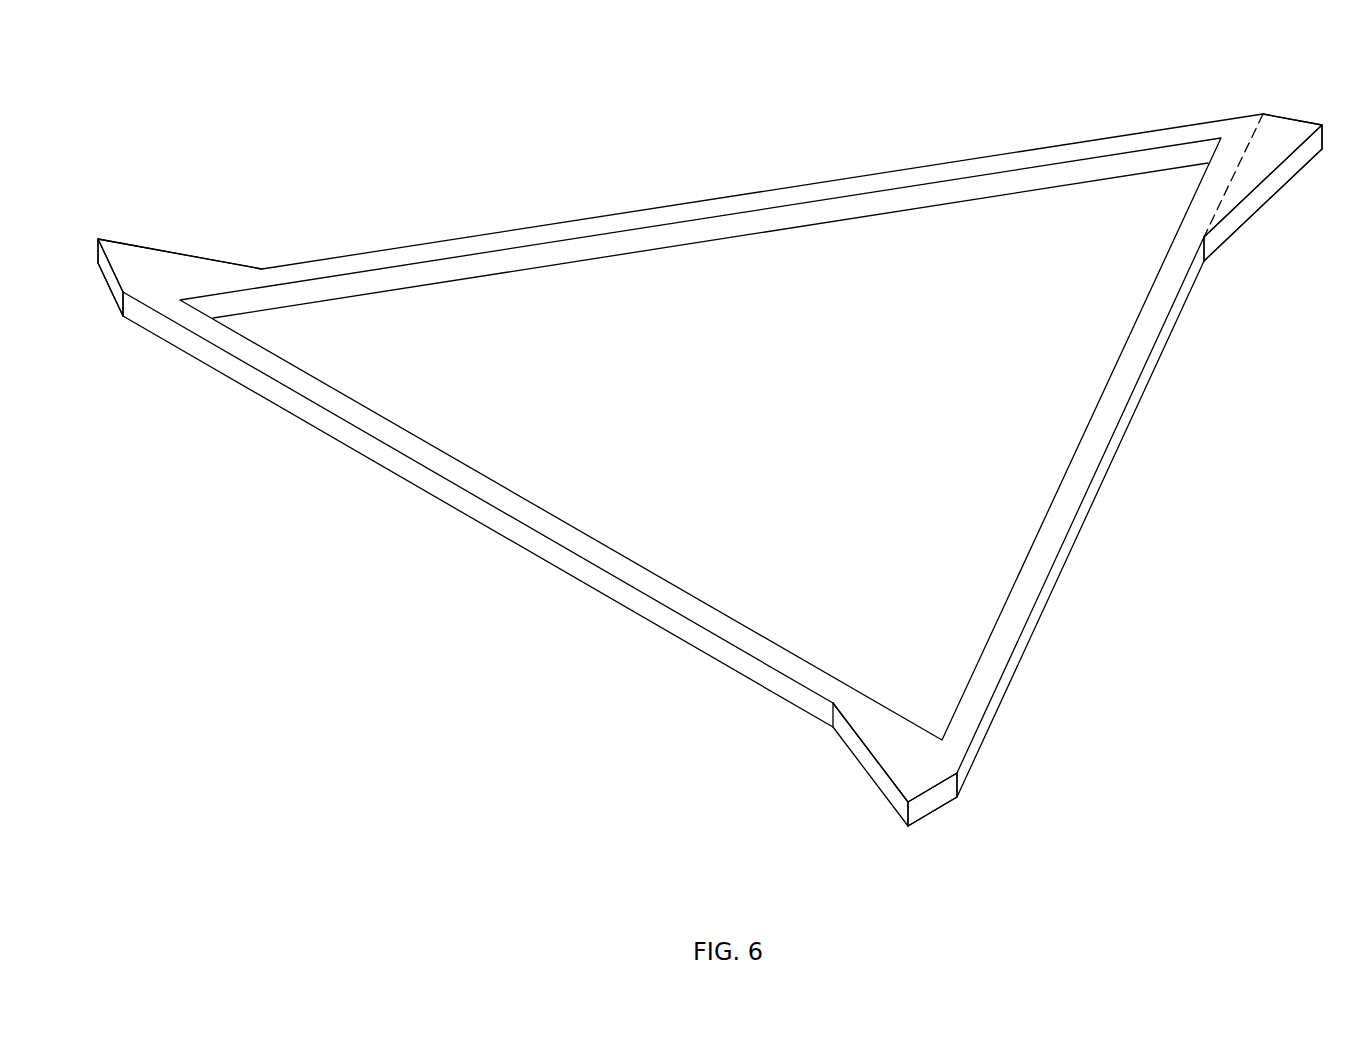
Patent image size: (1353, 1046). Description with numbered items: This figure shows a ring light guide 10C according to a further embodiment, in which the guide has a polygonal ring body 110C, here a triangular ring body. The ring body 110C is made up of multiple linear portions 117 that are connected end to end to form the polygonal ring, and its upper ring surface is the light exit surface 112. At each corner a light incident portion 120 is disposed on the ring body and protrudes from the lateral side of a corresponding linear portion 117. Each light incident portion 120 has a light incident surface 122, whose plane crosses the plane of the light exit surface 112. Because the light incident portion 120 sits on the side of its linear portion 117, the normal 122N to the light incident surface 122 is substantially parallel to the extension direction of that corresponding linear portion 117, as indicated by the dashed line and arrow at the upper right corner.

The ring light guide 10C is at (162, 70).
The polygonal ring body 110C is at (930, 150).
The light exit surface 112 is at (1202, 210).
The linear portion 117 is at (717, 210).
The light incident portion 120 is at (145, 265).
The light incident surface 122 is at (110, 277).
The normal to the light incident surface 122N is at (1262, 160).